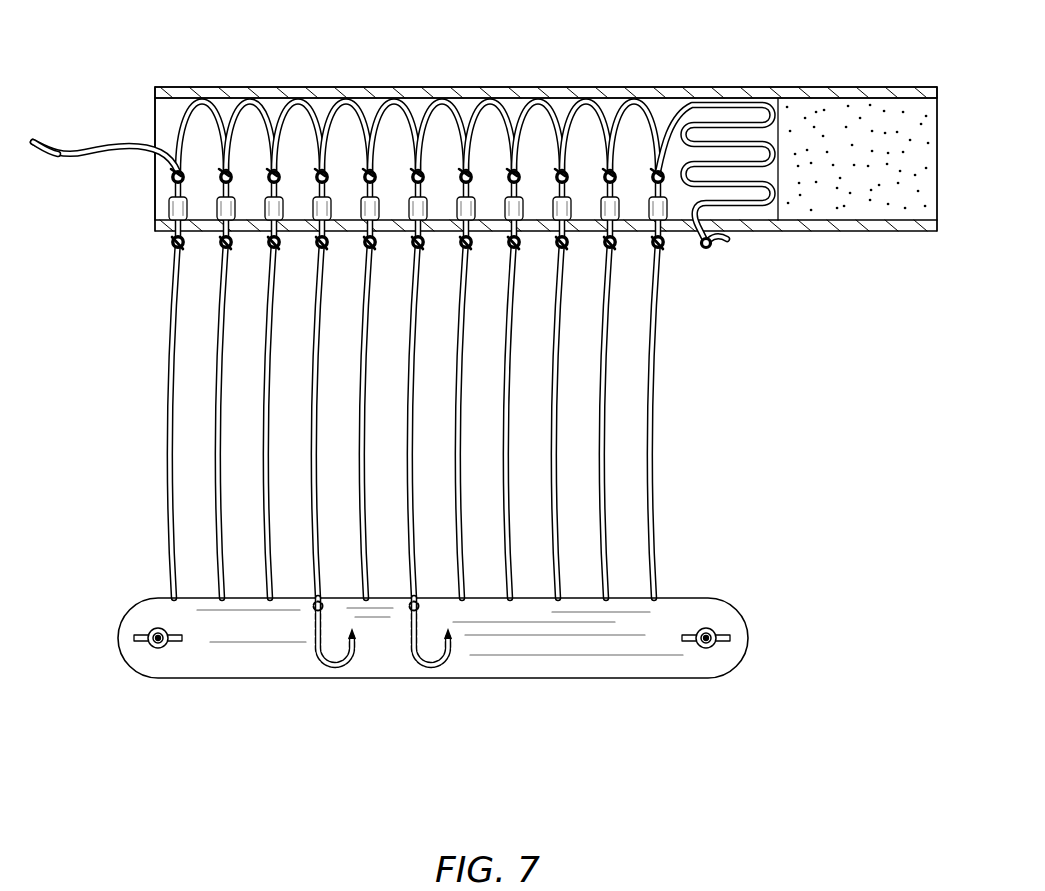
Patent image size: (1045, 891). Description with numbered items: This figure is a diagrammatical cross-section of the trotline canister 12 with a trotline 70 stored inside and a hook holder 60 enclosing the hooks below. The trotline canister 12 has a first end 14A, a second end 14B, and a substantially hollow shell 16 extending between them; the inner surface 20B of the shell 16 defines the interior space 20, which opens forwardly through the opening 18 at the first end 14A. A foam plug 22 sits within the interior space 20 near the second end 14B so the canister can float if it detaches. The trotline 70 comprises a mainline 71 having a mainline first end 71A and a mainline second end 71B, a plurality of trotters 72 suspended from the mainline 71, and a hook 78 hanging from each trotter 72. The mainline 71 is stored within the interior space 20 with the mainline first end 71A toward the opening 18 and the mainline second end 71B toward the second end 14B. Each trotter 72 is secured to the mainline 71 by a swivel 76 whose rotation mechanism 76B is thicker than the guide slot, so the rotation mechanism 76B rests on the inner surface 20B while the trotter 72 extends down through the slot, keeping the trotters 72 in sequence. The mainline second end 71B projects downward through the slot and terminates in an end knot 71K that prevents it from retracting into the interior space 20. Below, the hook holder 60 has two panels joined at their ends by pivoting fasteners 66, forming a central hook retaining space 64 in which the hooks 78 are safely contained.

The trotline canister 12 is at (293, 88).
The first end 14A is at (153, 92).
The second end 14B is at (936, 86).
The shell 16 is at (425, 92).
The opening 18 is at (153, 128).
The interior space 20 is at (175, 112).
The inner surface 20B is at (216, 155).
The foam plug 22 is at (905, 178).
The hook holder 60 is at (130, 604).
The central hook retaining space 64 is at (278, 630).
The pivoting fastener 66 is at (158, 648).
The trotline 70 is at (86, 181).
The mainline 71 is at (79, 158).
The mainline first end 71A is at (33, 140).
The mainline second end 71B is at (729, 242).
The end knot 71K is at (708, 250).
The trotter 72 is at (130, 412).
The swivel 76 is at (122, 228).
The rotation mechanism 76B is at (177, 210).
The hook 78 is at (343, 672).